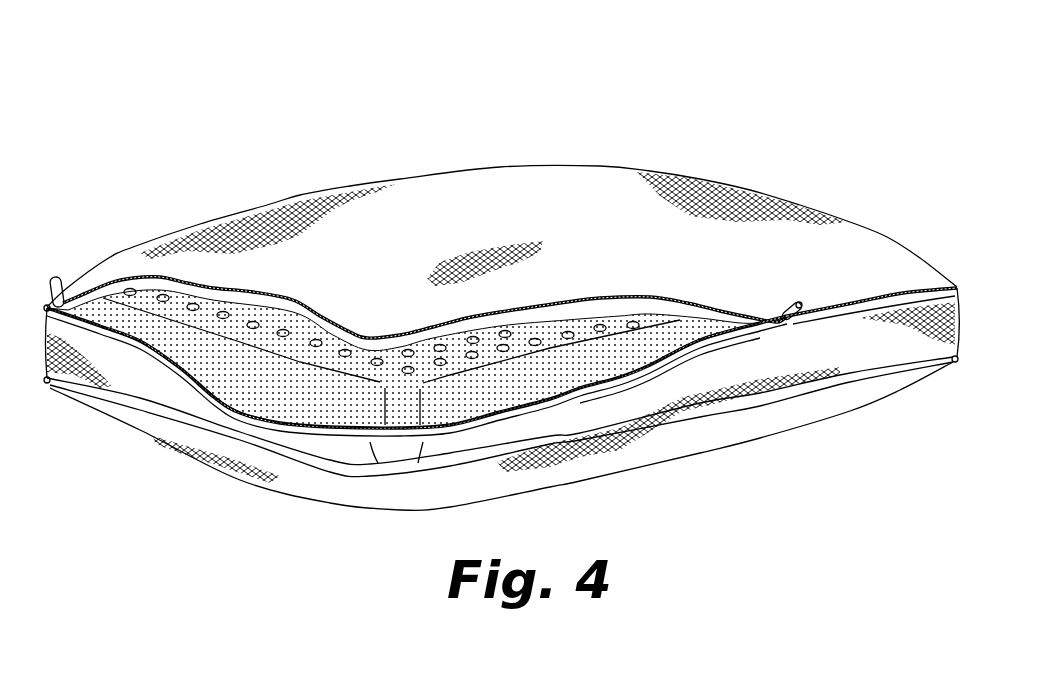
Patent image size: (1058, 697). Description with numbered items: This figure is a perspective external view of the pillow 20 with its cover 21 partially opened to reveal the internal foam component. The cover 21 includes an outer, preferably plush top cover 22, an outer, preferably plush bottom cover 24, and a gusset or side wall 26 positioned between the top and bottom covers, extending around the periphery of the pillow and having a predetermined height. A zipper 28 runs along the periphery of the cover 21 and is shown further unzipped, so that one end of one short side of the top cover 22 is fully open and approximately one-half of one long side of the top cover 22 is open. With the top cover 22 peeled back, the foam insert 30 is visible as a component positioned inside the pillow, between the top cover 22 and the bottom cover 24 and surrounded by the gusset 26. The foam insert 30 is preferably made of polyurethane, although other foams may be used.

The pillow 20 is at (822, 104).
The cover 21 is at (891, 232).
The top cover 22 is at (528, 199).
The bottom cover 24 is at (626, 458).
The gusset 26 is at (649, 390).
The zipper 28 is at (795, 302).
The foam insert 30 is at (299, 392).